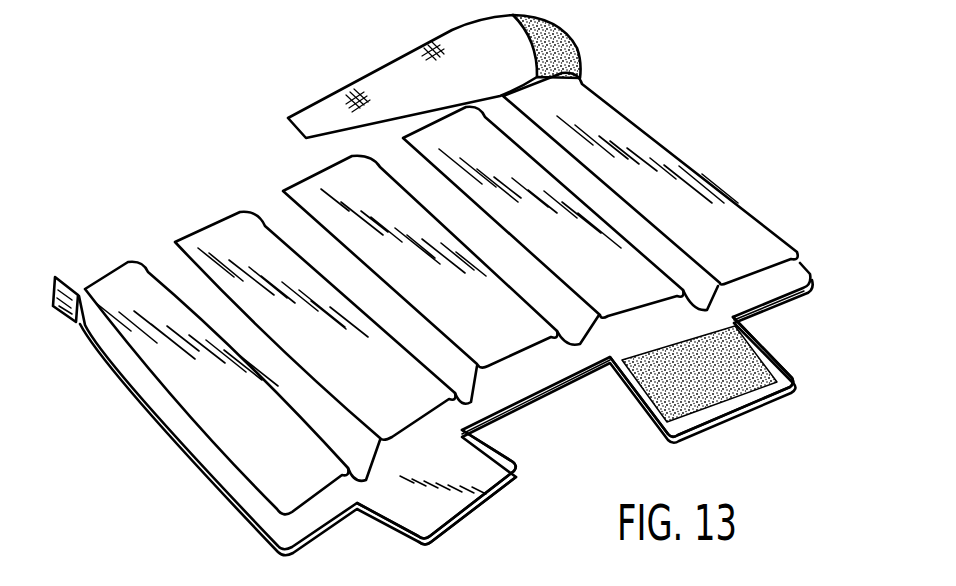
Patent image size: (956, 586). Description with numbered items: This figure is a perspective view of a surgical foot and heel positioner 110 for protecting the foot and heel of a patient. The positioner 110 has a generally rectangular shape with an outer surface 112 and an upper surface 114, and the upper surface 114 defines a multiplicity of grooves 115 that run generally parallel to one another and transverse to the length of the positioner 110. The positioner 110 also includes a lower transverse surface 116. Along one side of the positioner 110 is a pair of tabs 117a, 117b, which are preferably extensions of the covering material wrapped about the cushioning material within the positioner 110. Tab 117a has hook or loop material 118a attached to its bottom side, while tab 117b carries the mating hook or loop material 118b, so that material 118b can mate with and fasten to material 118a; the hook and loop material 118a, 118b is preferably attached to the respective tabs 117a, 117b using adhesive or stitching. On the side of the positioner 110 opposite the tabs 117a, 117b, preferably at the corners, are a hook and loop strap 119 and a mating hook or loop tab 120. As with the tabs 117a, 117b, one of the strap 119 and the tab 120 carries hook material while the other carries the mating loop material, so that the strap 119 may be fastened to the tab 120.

The foot and heel positioner 110 is at (686, 111).
The outer surface 112 is at (787, 277).
The upper surface 114 is at (707, 202).
The grooves 115 is at (263, 220).
The lower transverse surface 116 is at (773, 310).
The tab 117a is at (487, 477).
The hook or loop material 118a is at (407, 533).
The tab 117b is at (763, 402).
The mating hook or loop material 118b is at (752, 377).
The hook and loop strap 119 is at (395, 73).
The mating hook or loop tab 120 is at (58, 278).